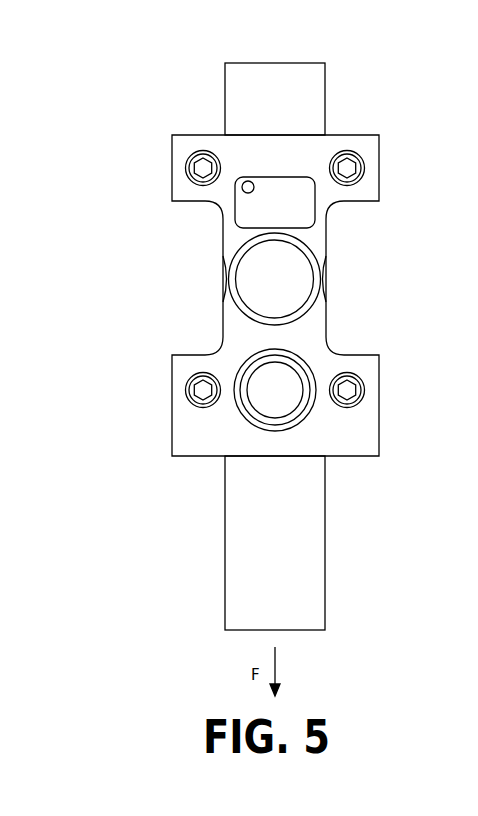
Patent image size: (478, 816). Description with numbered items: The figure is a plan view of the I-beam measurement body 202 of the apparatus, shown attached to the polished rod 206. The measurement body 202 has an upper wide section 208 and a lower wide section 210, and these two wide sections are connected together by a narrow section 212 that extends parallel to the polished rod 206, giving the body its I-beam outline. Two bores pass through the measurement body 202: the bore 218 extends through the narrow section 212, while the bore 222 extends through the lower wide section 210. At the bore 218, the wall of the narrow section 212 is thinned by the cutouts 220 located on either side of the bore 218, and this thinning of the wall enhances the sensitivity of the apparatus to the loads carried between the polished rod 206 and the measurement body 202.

The I-beam measurement body 202 is at (379, 168).
The polished rod 206 is at (273, 63).
The upper wide section 208 is at (172, 168).
The lower wide section 210 is at (187, 416).
The narrow section 212 is at (222, 248).
The bore 218 is at (288, 300).
The cutouts 220 is at (324, 276).
The bore 222 is at (303, 400).